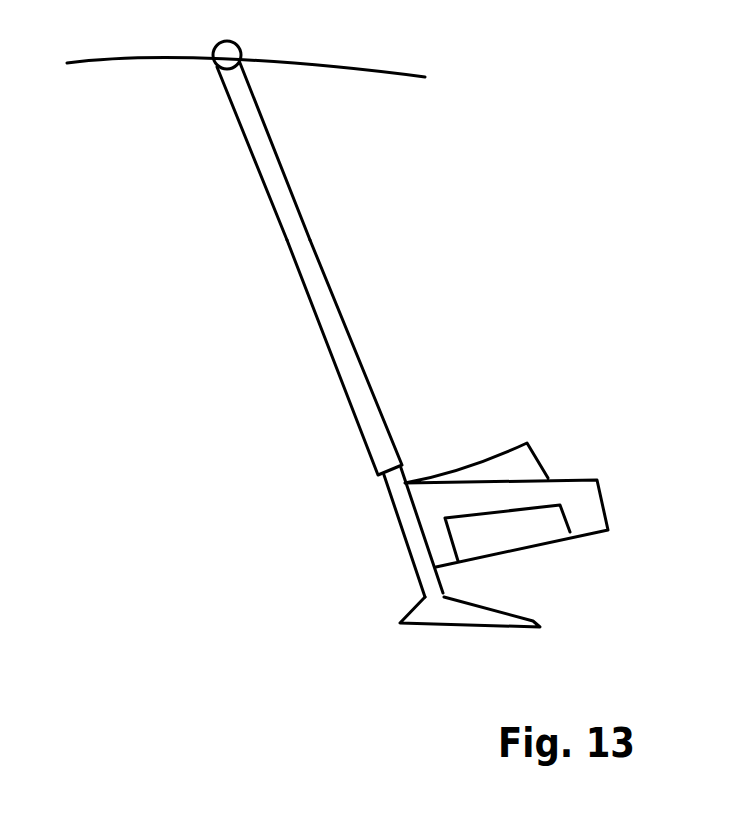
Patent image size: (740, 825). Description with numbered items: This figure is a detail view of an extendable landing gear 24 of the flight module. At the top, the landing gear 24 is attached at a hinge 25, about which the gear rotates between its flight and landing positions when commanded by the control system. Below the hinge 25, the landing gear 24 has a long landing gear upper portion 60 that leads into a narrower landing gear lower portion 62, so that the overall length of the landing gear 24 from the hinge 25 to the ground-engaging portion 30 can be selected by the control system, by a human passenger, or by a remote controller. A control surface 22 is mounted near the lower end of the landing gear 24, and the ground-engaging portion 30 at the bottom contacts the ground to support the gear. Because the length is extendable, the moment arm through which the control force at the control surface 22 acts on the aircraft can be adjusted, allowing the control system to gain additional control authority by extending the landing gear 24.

The control surface 22 is at (527, 443).
The landing gear 24 is at (293, 255).
The hinge 25 is at (215, 63).
The ground-engaging portion 30 is at (453, 625).
The landing gear upper portion 60 is at (327, 355).
The landing gear lower portion 62 is at (415, 573).